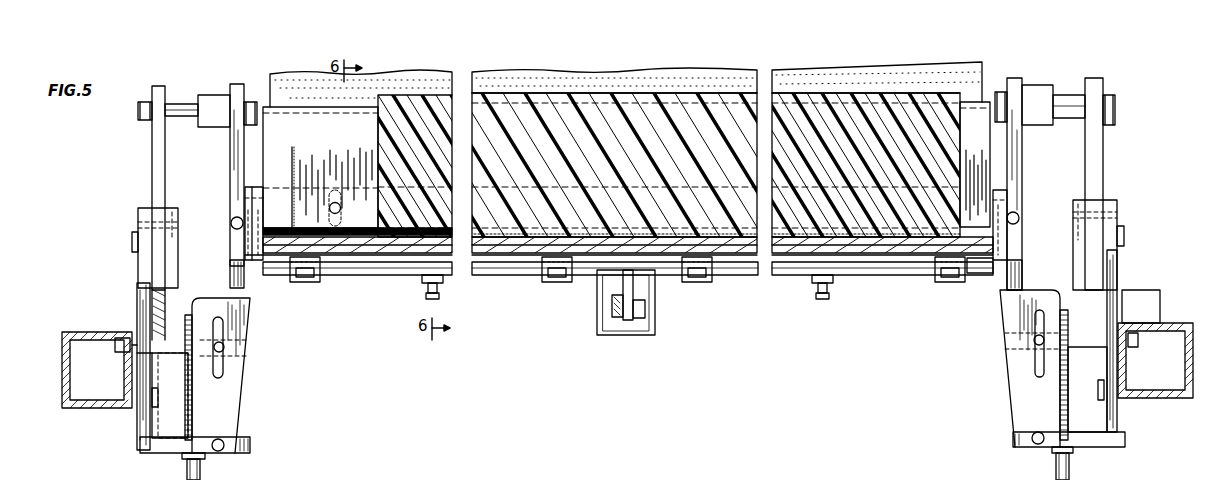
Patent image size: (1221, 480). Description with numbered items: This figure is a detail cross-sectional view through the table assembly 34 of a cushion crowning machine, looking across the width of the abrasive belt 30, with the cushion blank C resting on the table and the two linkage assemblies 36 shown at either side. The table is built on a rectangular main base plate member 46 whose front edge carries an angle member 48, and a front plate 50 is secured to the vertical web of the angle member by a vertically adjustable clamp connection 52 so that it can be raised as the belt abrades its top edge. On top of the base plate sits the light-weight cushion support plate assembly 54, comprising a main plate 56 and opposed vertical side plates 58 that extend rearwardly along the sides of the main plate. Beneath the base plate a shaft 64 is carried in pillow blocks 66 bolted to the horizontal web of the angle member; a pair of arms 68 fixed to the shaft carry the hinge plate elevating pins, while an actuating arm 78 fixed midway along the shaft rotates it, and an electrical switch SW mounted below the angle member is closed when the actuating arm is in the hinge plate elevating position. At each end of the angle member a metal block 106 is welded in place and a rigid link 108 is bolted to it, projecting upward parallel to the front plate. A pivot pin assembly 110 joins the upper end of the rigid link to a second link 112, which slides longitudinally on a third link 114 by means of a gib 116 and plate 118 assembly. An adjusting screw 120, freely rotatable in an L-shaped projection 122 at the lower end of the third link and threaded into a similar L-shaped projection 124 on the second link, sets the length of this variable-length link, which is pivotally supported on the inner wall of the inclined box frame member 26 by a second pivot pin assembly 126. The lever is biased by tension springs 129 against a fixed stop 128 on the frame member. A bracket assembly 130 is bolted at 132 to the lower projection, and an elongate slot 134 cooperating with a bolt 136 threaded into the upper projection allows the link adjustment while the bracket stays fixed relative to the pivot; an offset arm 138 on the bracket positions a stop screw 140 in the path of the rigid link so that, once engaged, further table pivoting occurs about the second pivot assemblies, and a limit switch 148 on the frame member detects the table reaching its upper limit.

The inclined box frame member 26 is at (97, 330).
The endless abrasive belt 30 is at (950, 80).
The table assembly 34 is at (747, 282).
The linkage assembly 36 is at (256, 375).
The main base plate member 46 is at (896, 256).
The angle member 48 is at (383, 262).
The front plate 50 is at (312, 136).
The vertically adjustable clamp connection 52 is at (340, 205).
The cushion support plate assembly 54 is at (978, 274).
The main plate 56 is at (652, 236).
The vertical side plates 58 is at (294, 172).
The shaft 64 is at (790, 272).
The pillow blocks 66 is at (308, 283).
The arms 68 is at (443, 284).
The actuating arm 78 is at (633, 294).
The metal block 106 is at (252, 195).
The rigid link 108 is at (231, 152).
The pivot pin assembly 110 is at (200, 103).
The second link 112 is at (155, 192).
The third link 114 is at (140, 303).
The gib 116 is at (162, 213).
The plate 118 is at (176, 244).
The adjusting screw 120 is at (188, 466).
The L-shaped projection 122 is at (245, 447).
The L-shaped projection 124 is at (175, 350).
The second pivot pin assembly 126 is at (118, 346).
The fixed stop 128 is at (157, 400).
The tension springs 129 is at (1122, 248).
The bracket assembly 130 is at (230, 402).
The bolt 132 is at (222, 452).
The elongate slot 134 is at (225, 362).
The bolt 136 is at (223, 346).
The offset arm 138 is at (231, 273).
The stop screw 140 is at (232, 224).
The limit switch 148 is at (1148, 305).
The cushion blanks C is at (598, 116).
The electrical switch SW is at (606, 308).